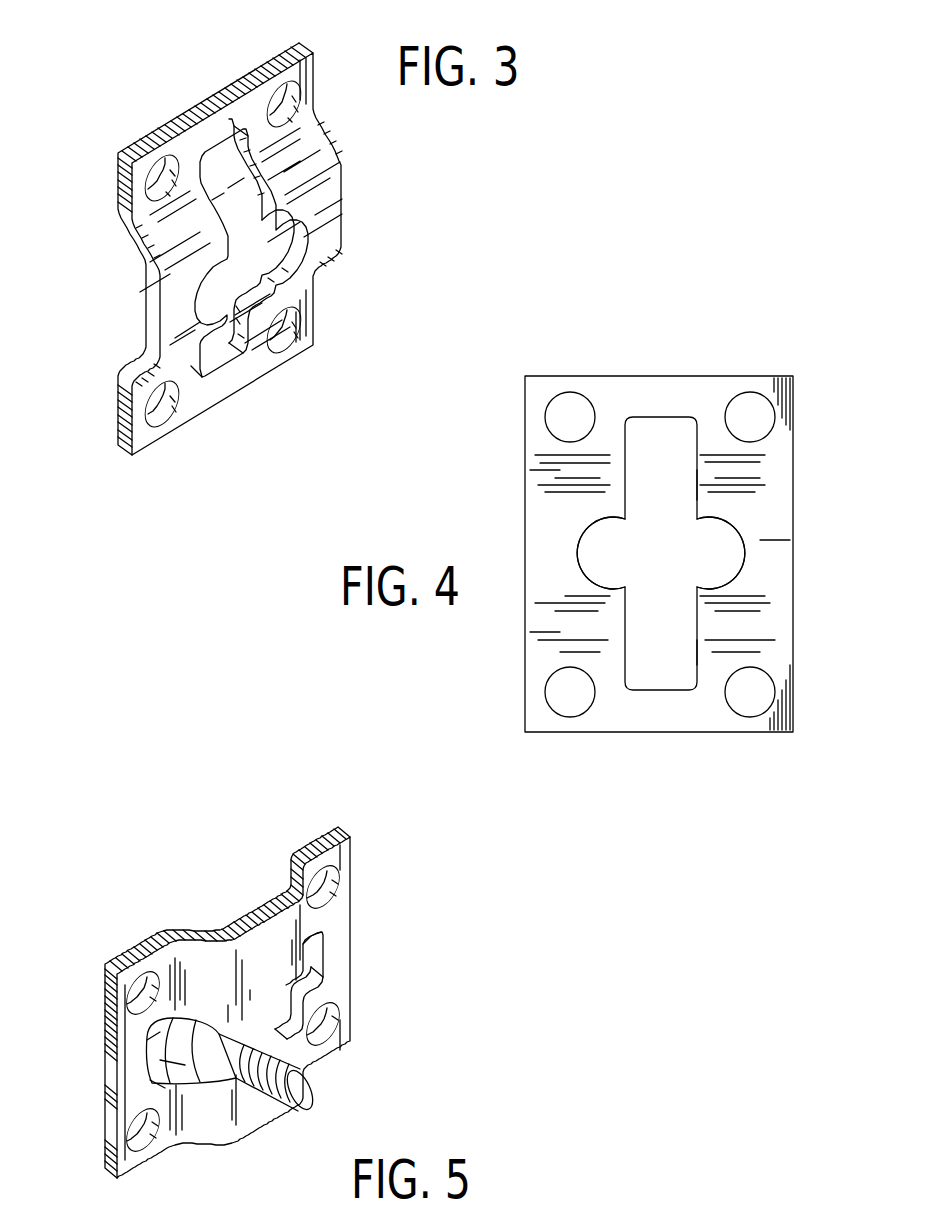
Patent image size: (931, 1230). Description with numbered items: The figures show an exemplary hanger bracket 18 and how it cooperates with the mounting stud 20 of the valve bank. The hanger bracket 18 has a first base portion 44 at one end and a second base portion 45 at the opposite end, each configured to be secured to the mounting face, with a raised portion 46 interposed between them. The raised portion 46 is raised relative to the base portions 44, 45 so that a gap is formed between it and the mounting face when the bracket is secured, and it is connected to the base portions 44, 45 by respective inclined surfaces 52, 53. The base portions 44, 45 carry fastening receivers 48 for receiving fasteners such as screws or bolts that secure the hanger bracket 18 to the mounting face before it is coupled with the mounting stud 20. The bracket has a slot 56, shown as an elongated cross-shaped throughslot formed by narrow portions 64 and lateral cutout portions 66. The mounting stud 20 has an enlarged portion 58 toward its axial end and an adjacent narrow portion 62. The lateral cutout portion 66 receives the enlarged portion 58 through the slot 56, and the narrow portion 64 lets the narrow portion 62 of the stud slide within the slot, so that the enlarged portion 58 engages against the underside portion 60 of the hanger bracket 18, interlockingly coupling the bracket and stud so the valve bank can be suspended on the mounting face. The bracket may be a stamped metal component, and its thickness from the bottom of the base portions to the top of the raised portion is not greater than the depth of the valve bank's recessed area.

In FIG. 3, the hanger bracket 18 is at (98, 83).
In FIG. 4, the hanger bracket 18 is at (744, 344).
In FIG. 5, the hanger bracket 18 is at (147, 912).
In FIG. 5, the mounting stud 20 is at (281, 1095).
In FIG. 3, the base portion 44 is at (318, 80).
In FIG. 4, the base portion 44 is at (794, 395).
In FIG. 5, the base portion 44 is at (313, 853).
In FIG. 3, the second base portion 45 is at (316, 320).
In FIG. 4, the second base portion 45 is at (794, 712).
In FIG. 5, the second base portion 45 is at (130, 950).
In FIG. 3, the raised portion 46 is at (345, 197).
In FIG. 4, the raised portion 46 is at (794, 552).
In FIG. 5, the raised portion 46 is at (247, 1128).
In FIG. 3, the fastening receivers 48 is at (286, 102).
In FIG. 4, the fastening receivers 48 is at (745, 403).
In FIG. 5, the fastening receivers 48 is at (233, 1008).
In FIG. 3, the inclined surface 52 is at (133, 250).
In FIG. 4, the inclined surface 52 is at (532, 473).
In FIG. 3, the inclined surface 53 is at (127, 373).
In FIG. 4, the inclined surface 53 is at (532, 632).
In FIG. 4, the slot 56 is at (658, 678).
In FIG. 5, the slot 56 is at (159, 1037).
In FIG. 5, the enlarged portion 58 is at (247, 1017).
In FIG. 5, the underside portion 60 is at (187, 1063).
In FIG. 5, the narrow portion 62 is at (277, 1108).
In FIG. 3, the narrow portions 64 is at (247, 201).
In FIG. 4, the narrow portions 64 is at (690, 484).
In FIG. 5, the narrow portions 64 is at (313, 970).
In FIG. 3, the lateral cutout portions 66 is at (299, 256).
In FIG. 4, the lateral cutout portions 66 is at (590, 546).
In FIG. 5, the lateral cutout portions 66 is at (312, 980).